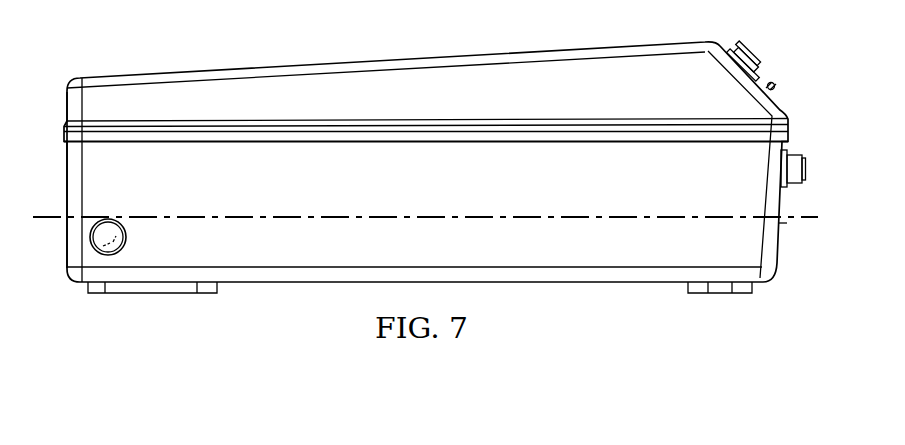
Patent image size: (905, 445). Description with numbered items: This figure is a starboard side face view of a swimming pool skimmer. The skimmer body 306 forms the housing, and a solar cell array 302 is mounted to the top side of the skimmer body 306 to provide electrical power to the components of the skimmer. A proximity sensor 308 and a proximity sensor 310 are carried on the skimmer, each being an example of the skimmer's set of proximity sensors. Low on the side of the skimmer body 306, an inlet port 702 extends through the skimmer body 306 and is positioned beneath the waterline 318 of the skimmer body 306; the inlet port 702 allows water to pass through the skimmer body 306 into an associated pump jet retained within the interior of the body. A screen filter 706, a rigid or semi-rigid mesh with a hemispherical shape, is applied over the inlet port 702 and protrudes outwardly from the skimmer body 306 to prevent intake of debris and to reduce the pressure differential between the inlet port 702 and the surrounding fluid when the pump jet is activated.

The solar cell array 302 is at (397, 60).
The skimmer body 306 is at (65, 100).
The proximity sensor 308 is at (773, 32).
The proximity sensor 310 is at (806, 166).
The waterline 318 is at (797, 218).
The inlet port 702 is at (125, 248).
The screen filter 706 is at (120, 225).